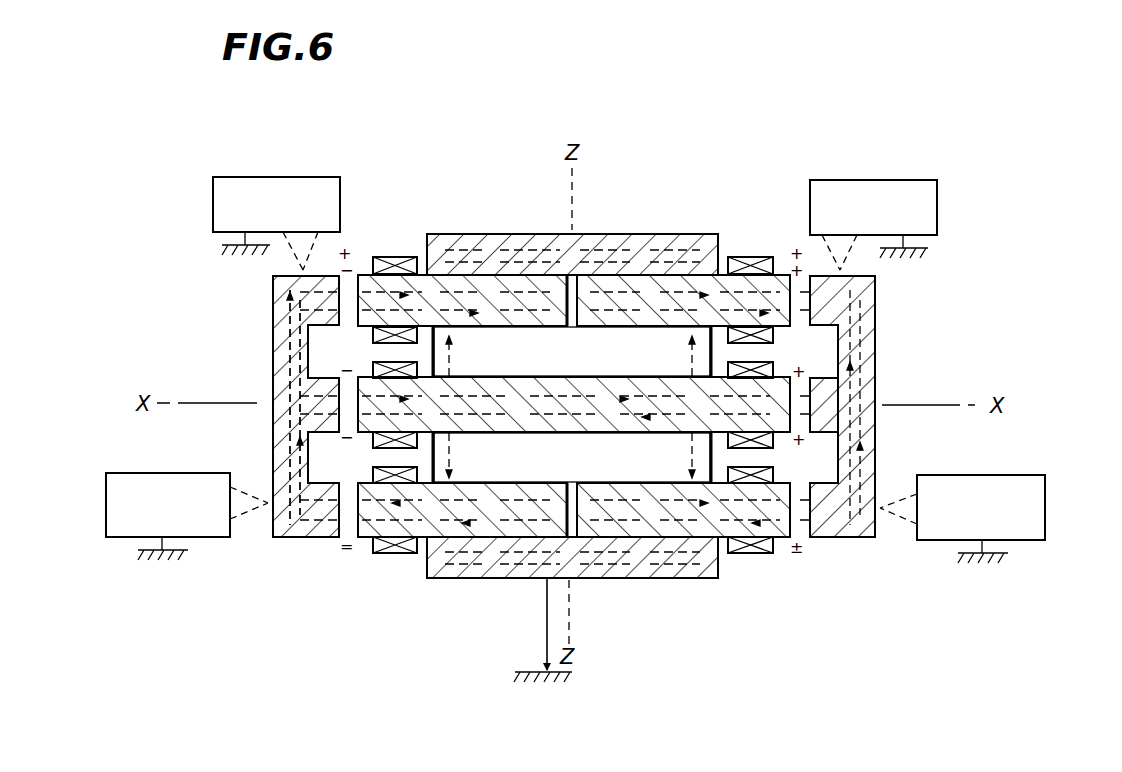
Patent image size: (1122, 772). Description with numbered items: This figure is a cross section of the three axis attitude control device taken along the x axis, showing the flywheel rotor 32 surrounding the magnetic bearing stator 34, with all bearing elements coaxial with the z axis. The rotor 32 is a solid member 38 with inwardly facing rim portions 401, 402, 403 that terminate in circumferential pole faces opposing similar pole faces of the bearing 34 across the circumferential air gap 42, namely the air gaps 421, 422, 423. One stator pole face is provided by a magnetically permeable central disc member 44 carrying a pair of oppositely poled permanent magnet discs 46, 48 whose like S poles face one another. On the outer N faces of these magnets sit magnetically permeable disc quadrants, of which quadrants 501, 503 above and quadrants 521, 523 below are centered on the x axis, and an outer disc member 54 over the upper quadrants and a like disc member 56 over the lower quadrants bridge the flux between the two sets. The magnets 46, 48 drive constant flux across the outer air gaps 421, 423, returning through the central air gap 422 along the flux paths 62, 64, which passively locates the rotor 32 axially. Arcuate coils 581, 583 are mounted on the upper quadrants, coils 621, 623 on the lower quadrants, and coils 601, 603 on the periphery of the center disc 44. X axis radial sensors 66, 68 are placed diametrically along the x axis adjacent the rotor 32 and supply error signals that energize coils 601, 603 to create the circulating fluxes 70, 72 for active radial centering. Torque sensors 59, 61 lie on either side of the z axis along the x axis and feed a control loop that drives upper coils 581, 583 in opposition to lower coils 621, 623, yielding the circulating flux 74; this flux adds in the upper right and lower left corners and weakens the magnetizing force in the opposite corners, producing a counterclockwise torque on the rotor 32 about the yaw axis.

The rotor 32 is at (878, 305).
The bearing stator 34 is at (578, 226).
The solid member 38 is at (860, 539).
The rim portion 401 is at (846, 315).
The rim portion 402 is at (858, 355).
The rim portion 403 is at (820, 490).
The circumferential air gap 42 is at (814, 544).
The air gap 421 is at (345, 328).
The central air gap 422 is at (347, 432).
The air gap 423 is at (338, 540).
The central disc member 44 is at (530, 385).
The permanent magnet disc 46 is at (572, 354).
The permanent magnet disc 48 is at (572, 459).
The magnetically permeable disc quadrant 501 is at (492, 284).
The magnetically permeable disc quadrant 503 is at (655, 280).
The magnetically permeable disc quadrant 521 is at (482, 542).
The magnetically permeable disc quadrant 523 is at (660, 542).
The outer magnetically permeable disc member 54 is at (549, 234).
The semi-permeable disc member 56 is at (508, 578).
The arcuate flux coil 581 is at (410, 257).
The arcuate flux coil 583 is at (766, 257).
The torque sensor 59 is at (213, 206).
The flux coil 601 is at (440, 371).
The flux coil 603 is at (775, 367).
The torque sensor 61 is at (937, 200).
The flux path 62 is at (453, 344).
The flux coil 621 is at (400, 553).
The flux coil 623 is at (740, 553).
The flux path 64 is at (452, 452).
The x axis radial sensor 66 is at (106, 513).
The x axis radial sensor 68 is at (1045, 508).
The circulating flux 70 is at (286, 320).
The circulating flux 72 is at (292, 538).
The circulating flux 74 is at (284, 292).